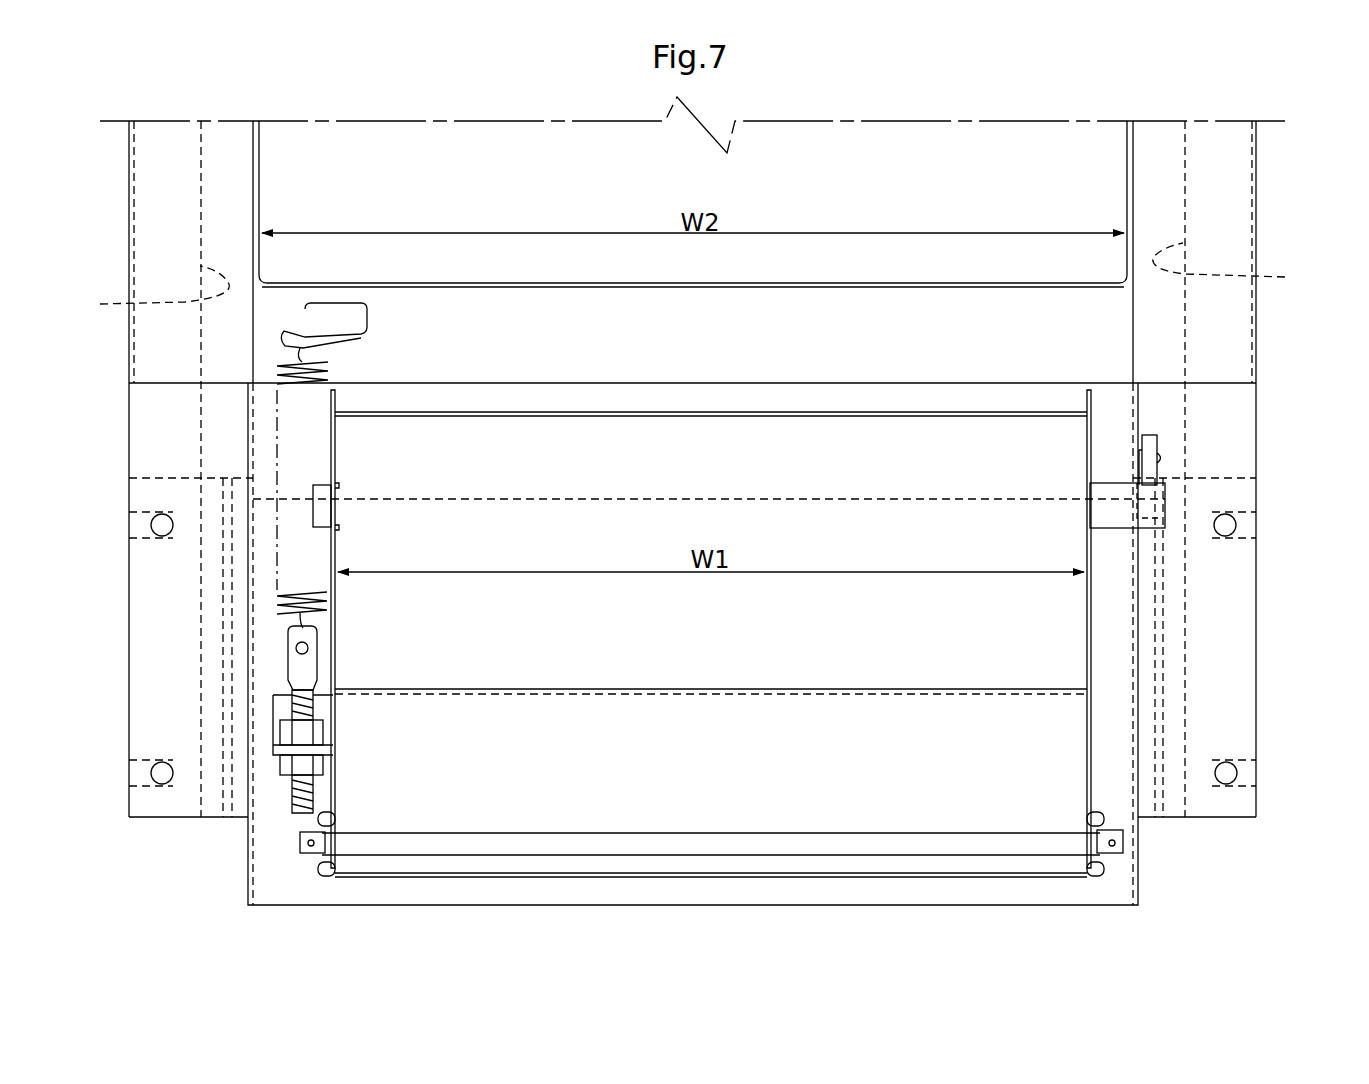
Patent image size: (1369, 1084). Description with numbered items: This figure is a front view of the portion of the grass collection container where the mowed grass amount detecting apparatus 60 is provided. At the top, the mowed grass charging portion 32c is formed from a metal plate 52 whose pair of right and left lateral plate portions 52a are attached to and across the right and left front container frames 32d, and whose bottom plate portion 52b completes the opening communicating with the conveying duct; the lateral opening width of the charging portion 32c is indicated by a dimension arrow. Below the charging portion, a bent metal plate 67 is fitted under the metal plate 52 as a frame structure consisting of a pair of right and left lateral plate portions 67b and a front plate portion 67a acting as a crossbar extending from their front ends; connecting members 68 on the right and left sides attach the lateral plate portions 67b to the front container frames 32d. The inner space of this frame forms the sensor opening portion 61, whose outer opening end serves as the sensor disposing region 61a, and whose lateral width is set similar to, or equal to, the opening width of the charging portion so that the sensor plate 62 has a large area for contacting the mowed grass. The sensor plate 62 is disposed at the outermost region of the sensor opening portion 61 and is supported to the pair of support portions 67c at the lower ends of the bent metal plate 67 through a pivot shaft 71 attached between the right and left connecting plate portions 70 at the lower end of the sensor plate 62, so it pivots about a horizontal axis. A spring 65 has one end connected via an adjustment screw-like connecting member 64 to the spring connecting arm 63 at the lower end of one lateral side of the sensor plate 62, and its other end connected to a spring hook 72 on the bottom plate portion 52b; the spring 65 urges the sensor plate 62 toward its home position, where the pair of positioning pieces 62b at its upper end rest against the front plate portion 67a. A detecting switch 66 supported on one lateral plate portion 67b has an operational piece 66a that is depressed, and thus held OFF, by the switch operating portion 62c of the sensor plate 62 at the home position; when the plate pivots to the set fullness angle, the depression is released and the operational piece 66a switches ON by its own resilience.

The mowed grass charging portion 32c is at (908, 152).
The front container frame 32d is at (692, 281).
The metal plate 52 is at (692, 513).
The lateral plate portion 52a is at (253, 188).
The bottom plate portion 52b is at (1110, 327).
The mowed grass amount detecting apparatus 60 is at (1279, 390).
The sensor opening portion 61 is at (711, 385).
The sensor disposing region 61a is at (750, 426).
The sensor plate 62 is at (678, 445).
The positioning piece 62b is at (335, 405).
The switch operating portion 62c is at (1113, 530).
The spring connecting arm 63 is at (325, 750).
The adjustment screw-like connecting member 64 is at (315, 712).
The spring 65 is at (333, 600).
The detecting switch 66 is at (1187, 435).
The operational piece 66a is at (1150, 455).
The bent metal plate 67 is at (711, 636).
The front plate portion 67a is at (857, 396).
The lateral plate portion 67b is at (248, 770).
The support portion 67c is at (313, 850).
The connecting member 68 is at (215, 668).
The connecting plate portion 70 is at (337, 807).
The pivot shaft 71 is at (777, 833).
The spring hook 72 is at (370, 318).